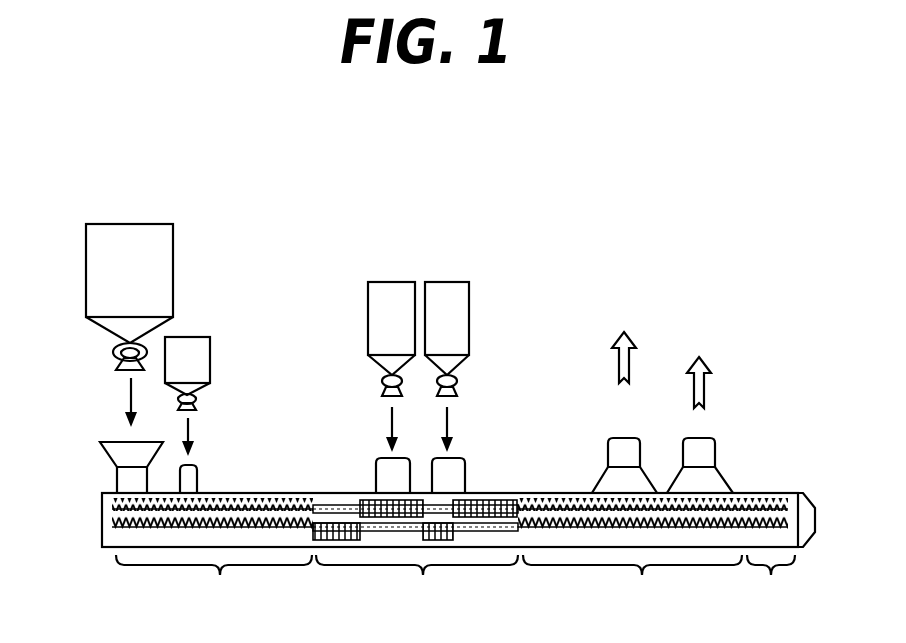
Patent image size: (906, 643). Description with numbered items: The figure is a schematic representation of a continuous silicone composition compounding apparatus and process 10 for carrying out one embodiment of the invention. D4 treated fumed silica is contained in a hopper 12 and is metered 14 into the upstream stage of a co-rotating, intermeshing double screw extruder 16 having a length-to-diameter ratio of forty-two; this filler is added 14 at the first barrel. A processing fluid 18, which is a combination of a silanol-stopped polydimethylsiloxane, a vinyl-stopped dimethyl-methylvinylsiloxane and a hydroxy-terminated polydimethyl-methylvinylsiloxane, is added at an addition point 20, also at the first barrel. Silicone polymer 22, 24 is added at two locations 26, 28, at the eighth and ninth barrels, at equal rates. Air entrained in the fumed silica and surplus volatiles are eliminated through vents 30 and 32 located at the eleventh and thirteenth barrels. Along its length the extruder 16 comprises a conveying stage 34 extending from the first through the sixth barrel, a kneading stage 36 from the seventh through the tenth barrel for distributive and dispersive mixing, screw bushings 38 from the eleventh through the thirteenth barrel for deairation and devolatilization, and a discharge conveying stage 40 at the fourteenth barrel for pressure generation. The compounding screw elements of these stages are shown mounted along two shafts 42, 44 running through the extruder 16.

The apparatus and process 10 is at (465, 185).
The hopper 12 is at (178, 262).
The metering of filler 14 is at (131, 398).
The double screw extruder 16 is at (102, 512).
The processing fluid 18 is at (213, 354).
The processing fluid addition point 20 is at (188, 438).
The silicone polymer 22 is at (389, 282).
The silicone polymer 24 is at (453, 282).
The silicone polymer addition point 26 is at (391, 420).
The silicone polymer addition point 28 is at (448, 420).
The vent 30 is at (608, 452).
The vent 32 is at (715, 452).
The conveying stage 34 is at (214, 583).
The kneading stage 36 is at (417, 583).
The screw bushings 38 is at (632, 583).
The discharge conveying stage 40 is at (771, 583).
The shaft 42 is at (789, 508).
The shaft 44 is at (112, 531).